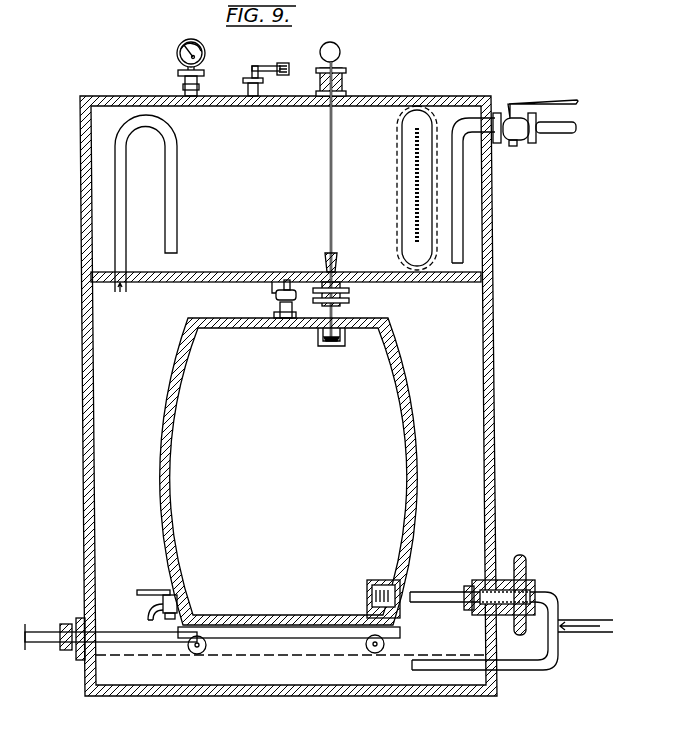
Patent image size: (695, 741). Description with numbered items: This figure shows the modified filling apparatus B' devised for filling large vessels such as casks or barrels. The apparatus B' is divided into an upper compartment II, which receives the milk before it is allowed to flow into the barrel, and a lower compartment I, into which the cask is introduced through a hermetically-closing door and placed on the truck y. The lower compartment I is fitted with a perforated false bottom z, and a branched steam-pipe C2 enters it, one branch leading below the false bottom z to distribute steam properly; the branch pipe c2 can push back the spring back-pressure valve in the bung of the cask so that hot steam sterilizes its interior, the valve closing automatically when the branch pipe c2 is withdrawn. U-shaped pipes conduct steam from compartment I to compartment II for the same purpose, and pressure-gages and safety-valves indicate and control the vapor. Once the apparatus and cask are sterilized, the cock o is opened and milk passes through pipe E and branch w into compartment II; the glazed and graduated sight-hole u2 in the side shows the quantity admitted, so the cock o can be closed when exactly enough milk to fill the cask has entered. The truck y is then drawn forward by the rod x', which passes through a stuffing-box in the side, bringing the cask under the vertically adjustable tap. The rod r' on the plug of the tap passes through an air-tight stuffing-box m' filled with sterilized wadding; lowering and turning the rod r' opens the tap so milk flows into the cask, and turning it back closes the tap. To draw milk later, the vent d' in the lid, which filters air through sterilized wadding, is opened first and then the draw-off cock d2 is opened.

The filling apparatus B' is at (300, 396).
The upper compartment II is at (208, 183).
The lower compartment I is at (289, 410).
The stuffing-box m' is at (347, 69).
The rod r' is at (334, 204).
The vent d' is at (273, 299).
The truck y is at (283, 612).
The perforated false bottom z is at (291, 649).
The rod x' is at (111, 635).
The draw-off cock d2 is at (164, 595).
The branch pipe c2 is at (511, 612).
The branched steam-pipe C2 is at (566, 612).
The branch w is at (458, 222).
The graduated sight-hole u2 is at (412, 205).
The pipe E is at (559, 140).
The cock o is at (511, 141).